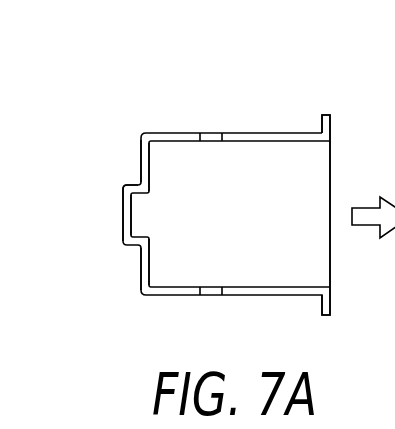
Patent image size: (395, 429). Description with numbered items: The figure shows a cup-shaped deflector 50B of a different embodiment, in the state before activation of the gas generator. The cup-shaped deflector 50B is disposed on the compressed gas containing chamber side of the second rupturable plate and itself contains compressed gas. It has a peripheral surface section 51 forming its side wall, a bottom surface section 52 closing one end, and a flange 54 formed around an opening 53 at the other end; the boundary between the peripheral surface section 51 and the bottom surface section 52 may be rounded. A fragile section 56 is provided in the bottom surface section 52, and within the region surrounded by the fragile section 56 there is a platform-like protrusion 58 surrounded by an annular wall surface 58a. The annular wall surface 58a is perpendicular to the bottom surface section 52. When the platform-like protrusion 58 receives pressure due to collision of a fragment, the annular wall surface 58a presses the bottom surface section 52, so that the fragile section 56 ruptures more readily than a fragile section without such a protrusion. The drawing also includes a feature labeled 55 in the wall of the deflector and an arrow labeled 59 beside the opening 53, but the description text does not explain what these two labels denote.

The cup-shaped deflector 50B is at (252, 113).
The peripheral surface section 51 is at (248, 297).
The bottom surface section 52 is at (140, 158).
The opening 53 is at (332, 273).
The flange 54 is at (332, 121).
The upper slot 55 is at (214, 138).
The fragile section 56 is at (142, 257).
The platform-like protrusion 58 is at (121, 213).
The annular wall surface 58a is at (133, 186).
The insertion direction arrow 59 is at (373, 202).